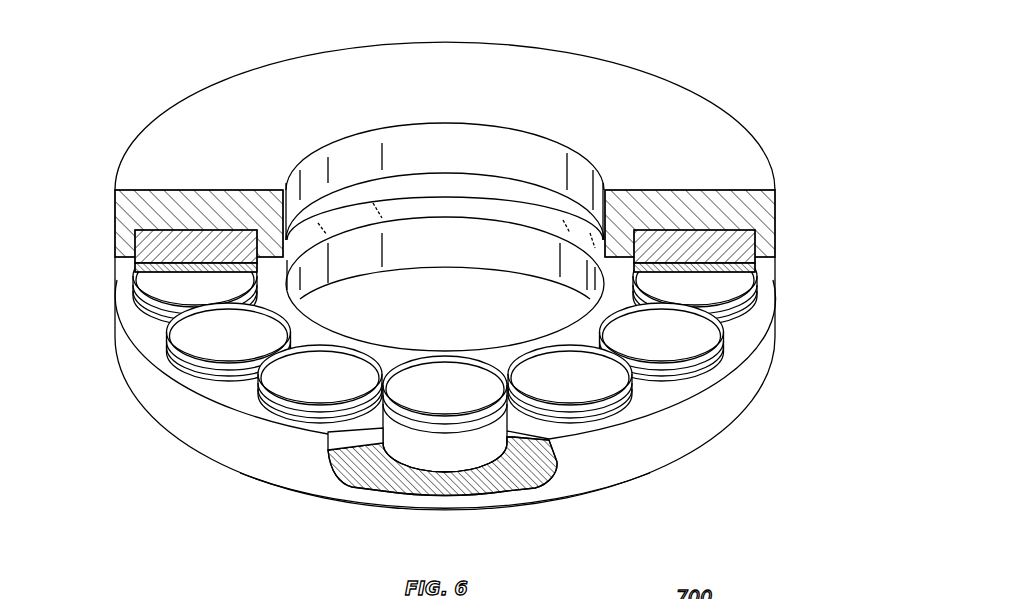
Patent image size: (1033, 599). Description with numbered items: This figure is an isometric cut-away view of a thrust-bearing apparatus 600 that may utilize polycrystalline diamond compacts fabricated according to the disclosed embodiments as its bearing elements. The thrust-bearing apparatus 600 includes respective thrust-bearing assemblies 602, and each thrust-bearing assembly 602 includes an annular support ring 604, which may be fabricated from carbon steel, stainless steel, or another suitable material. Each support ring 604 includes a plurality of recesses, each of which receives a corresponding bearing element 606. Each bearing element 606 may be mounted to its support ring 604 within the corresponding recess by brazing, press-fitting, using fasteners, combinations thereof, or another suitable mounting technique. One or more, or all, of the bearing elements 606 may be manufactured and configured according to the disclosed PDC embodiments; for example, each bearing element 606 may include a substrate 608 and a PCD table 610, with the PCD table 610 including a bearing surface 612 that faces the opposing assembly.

The thrust-bearing apparatus 600 is at (672, 56).
The thrust-bearing assembly 602 is at (790, 238).
The annular support ring 604 is at (768, 210).
The bearing element 606 is at (411, 480).
The substrate 608 is at (470, 452).
The PCD table 610 is at (335, 426).
The bearing surface 612 is at (452, 392).